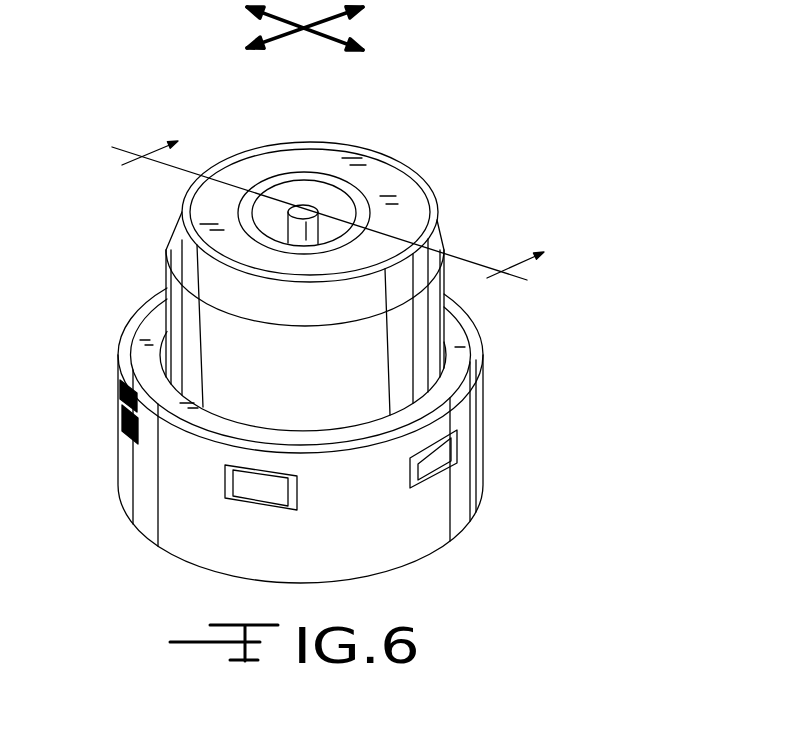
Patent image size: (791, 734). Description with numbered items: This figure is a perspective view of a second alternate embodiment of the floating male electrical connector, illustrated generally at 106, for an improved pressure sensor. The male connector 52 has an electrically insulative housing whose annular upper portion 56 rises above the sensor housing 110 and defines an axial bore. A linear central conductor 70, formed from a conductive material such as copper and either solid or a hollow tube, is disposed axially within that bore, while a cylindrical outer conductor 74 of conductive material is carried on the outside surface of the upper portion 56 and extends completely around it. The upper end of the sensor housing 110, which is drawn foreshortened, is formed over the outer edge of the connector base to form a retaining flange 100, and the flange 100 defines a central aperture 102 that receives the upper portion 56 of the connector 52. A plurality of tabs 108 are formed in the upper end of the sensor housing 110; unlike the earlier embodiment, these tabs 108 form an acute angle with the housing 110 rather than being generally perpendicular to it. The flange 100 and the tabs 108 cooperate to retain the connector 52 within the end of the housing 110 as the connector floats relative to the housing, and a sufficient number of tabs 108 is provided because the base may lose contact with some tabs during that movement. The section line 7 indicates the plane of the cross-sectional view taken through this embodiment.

The section line 7- 7 is at (319, 224).
The male electrical connector 52 is at (351, 255).
The annular upper portion 56 is at (338, 163).
The central conductor 70 is at (318, 232).
The outer conductor 74 is at (400, 170).
The retaining flange 100 is at (474, 358).
The central aperture 102 is at (156, 328).
The second alternate embodiment of the male connector 106 is at (382, 426).
The tabs 108 is at (442, 473).
The sensor housing 110 is at (478, 457).